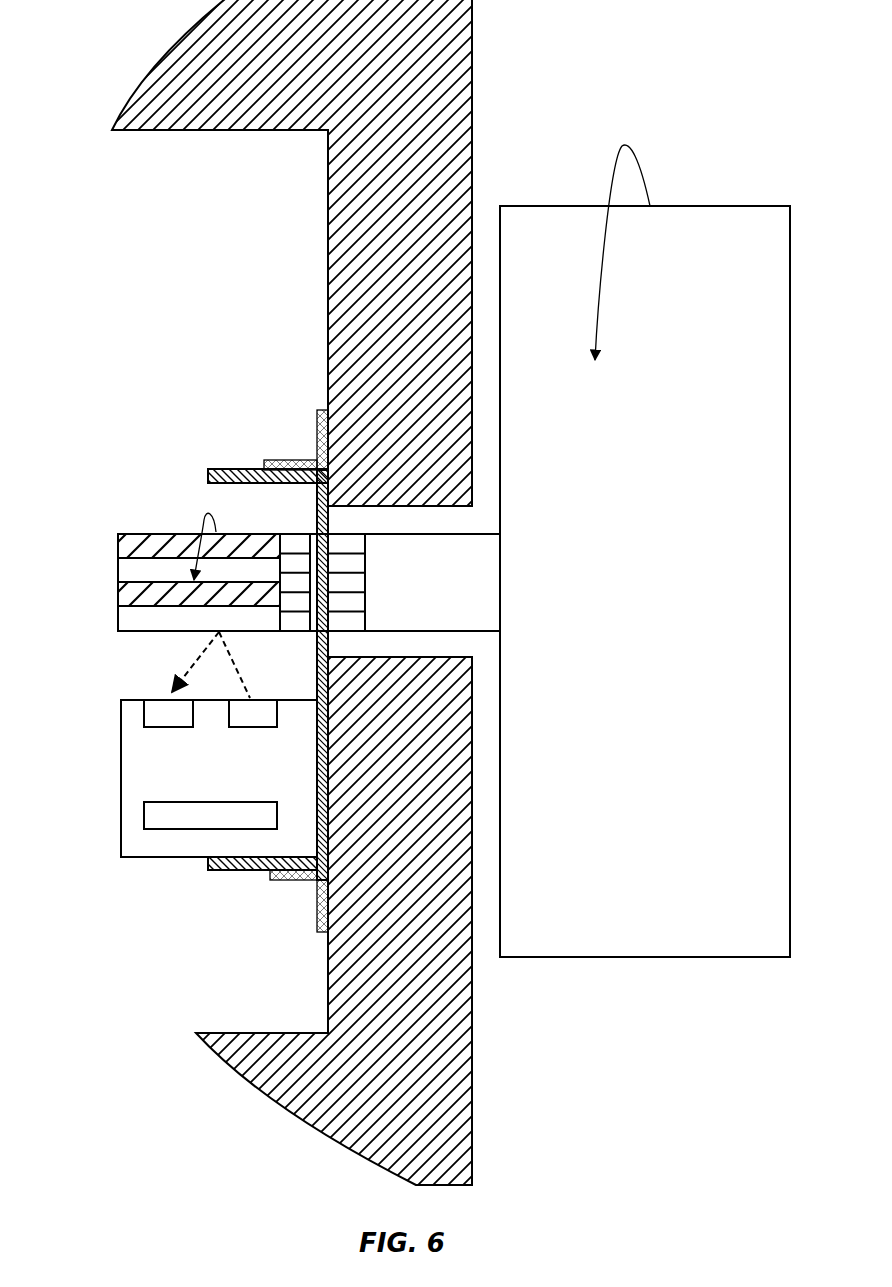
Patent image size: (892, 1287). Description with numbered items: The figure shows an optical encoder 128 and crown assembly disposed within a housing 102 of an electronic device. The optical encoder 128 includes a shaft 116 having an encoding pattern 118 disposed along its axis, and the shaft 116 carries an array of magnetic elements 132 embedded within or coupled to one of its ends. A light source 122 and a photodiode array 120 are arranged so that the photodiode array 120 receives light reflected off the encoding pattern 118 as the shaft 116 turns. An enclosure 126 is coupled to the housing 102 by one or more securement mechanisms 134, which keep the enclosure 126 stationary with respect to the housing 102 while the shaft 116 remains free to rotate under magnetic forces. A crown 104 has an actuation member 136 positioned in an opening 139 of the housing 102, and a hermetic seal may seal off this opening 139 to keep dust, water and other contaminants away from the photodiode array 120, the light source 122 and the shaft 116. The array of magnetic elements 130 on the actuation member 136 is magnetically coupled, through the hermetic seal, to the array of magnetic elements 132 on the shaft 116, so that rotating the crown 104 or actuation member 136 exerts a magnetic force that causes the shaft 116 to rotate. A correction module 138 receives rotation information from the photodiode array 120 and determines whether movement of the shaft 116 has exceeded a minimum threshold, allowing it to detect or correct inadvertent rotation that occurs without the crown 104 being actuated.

The housing 102 is at (466, 73).
The crown 104 is at (697, 206).
The shaft 116 is at (118, 572).
The encoding pattern 118 is at (117, 605).
The photodiode array 120 is at (181, 744).
The light source 122 is at (220, 725).
The enclosure 126 is at (208, 476).
The optical encoder 128 is at (162, 547).
The array of magnetic elements 130 is at (371, 631).
The array of magnetic elements 132 is at (300, 533).
The securement mechanism 134 is at (323, 905).
The actuation member 136 is at (500, 534).
The correction module 138 is at (144, 813).
The opening 139 is at (470, 648).